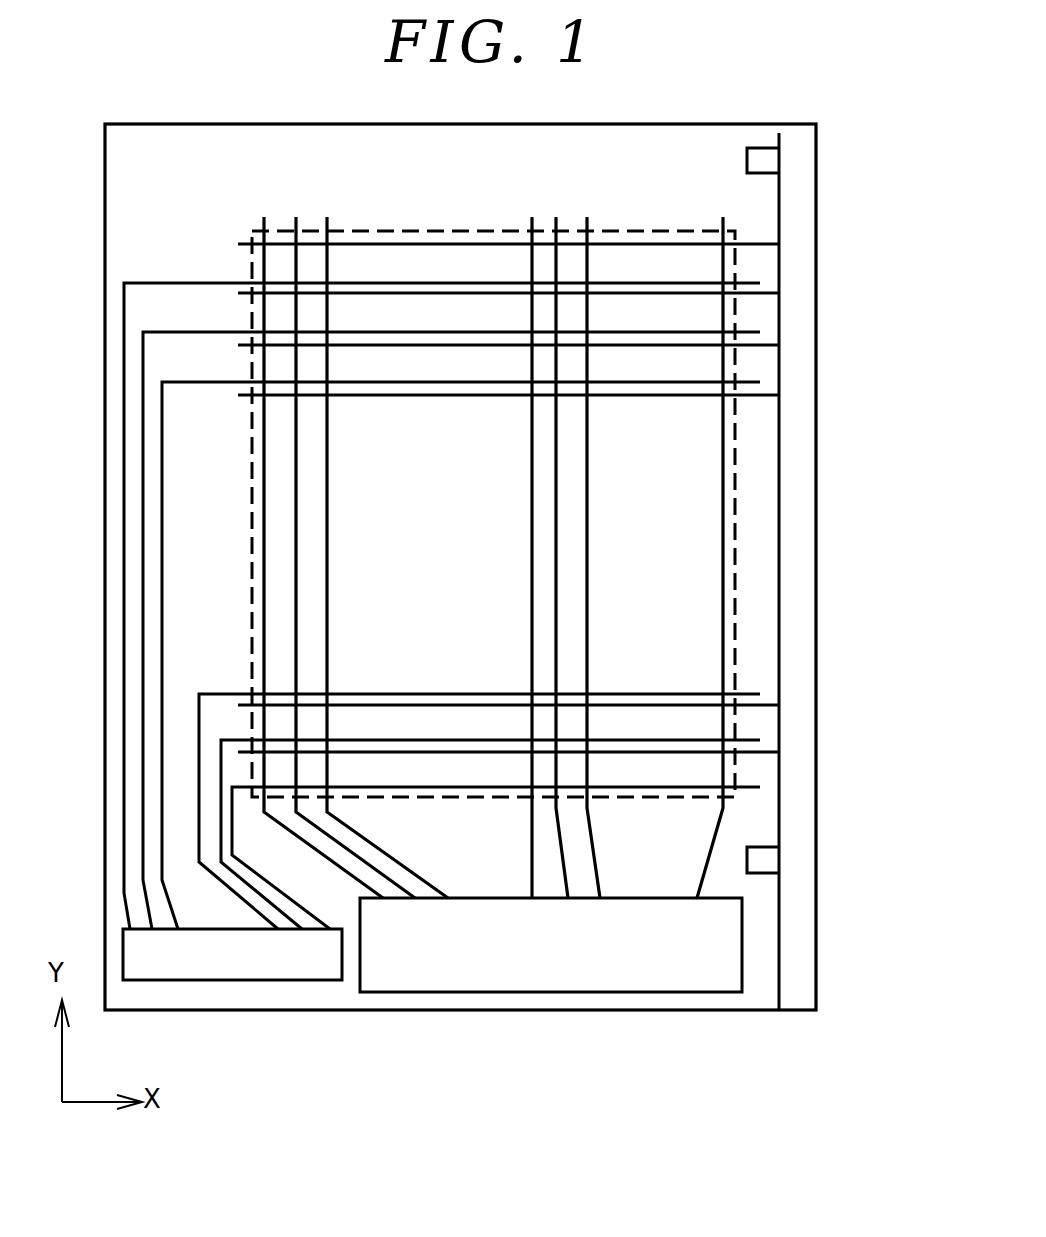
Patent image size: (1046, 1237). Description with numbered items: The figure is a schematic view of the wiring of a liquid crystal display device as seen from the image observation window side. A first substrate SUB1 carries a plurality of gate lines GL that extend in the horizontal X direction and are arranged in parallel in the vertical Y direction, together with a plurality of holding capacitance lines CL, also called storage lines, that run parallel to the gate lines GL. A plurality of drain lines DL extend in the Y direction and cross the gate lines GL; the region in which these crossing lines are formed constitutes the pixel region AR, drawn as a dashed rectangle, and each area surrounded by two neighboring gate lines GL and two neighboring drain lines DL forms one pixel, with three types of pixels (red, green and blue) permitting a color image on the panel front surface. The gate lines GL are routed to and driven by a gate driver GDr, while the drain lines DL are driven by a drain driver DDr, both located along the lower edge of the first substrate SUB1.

The first substrate SUB1 is at (816, 181).
The gate lines GL is at (708, 281).
The holding capacitance lines CL is at (693, 393).
The drain lines DL is at (589, 575).
The pixel region AR is at (252, 498).
The gate driver GDr is at (232, 954).
The drain driver DDr is at (551, 945).